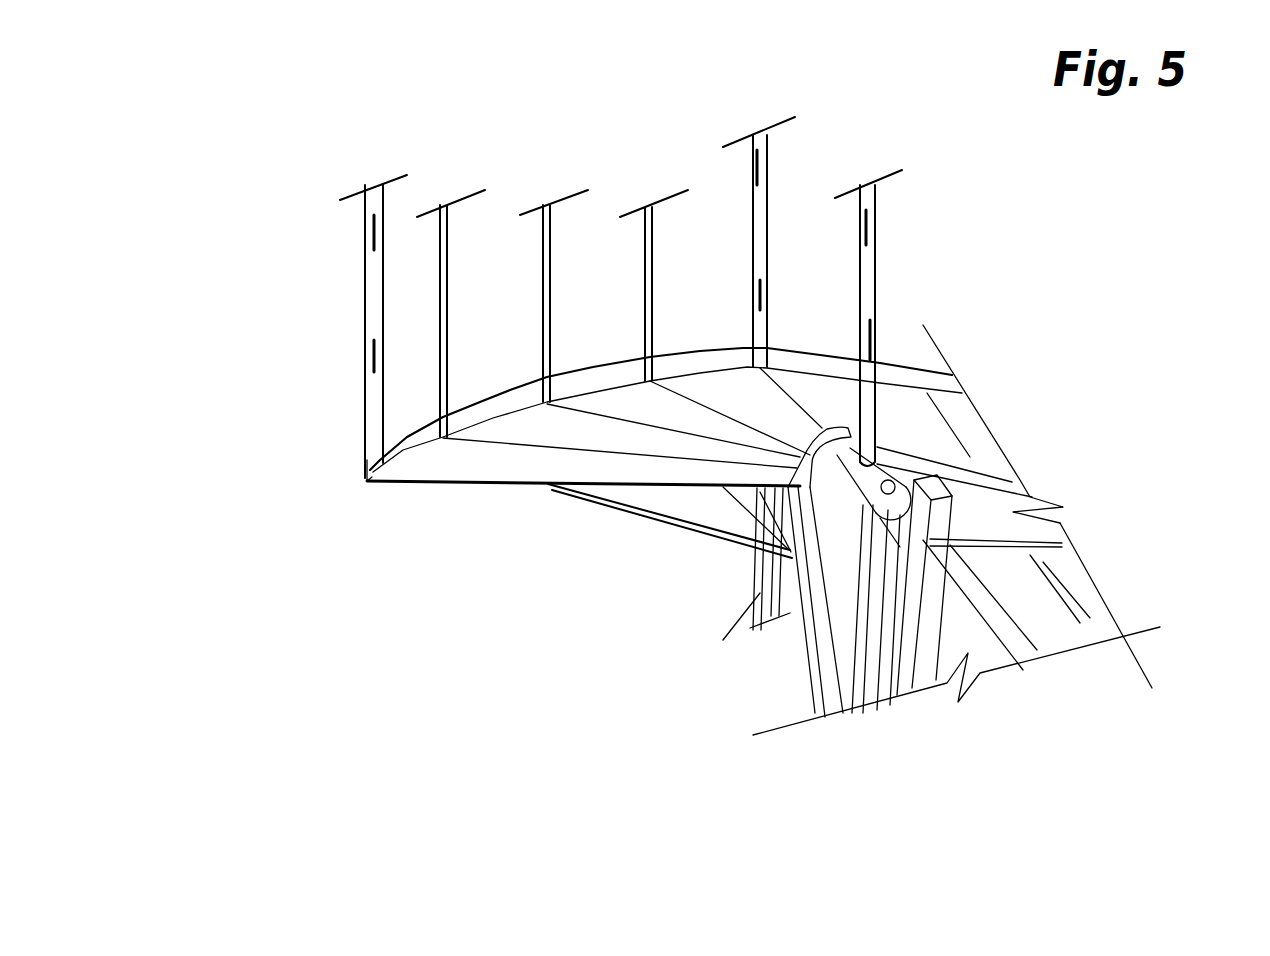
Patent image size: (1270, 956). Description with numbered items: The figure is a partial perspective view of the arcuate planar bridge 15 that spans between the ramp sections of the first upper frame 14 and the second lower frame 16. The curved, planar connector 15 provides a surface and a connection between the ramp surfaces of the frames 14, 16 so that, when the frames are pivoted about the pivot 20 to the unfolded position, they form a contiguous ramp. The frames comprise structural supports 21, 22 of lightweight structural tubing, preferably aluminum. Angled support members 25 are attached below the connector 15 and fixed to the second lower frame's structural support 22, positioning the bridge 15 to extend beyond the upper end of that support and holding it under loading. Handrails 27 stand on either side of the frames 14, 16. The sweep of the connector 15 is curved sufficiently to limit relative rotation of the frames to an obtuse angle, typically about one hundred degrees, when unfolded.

The first upper frame 14 is at (1040, 603).
The arcuate planar bridge 15 is at (533, 457).
The second lower frame 16 is at (930, 437).
The pivot 20 is at (882, 500).
The structural support 21 is at (935, 527).
The structural support 22 is at (793, 617).
The angled support members 25 is at (750, 512).
The handrails 27 is at (372, 292).